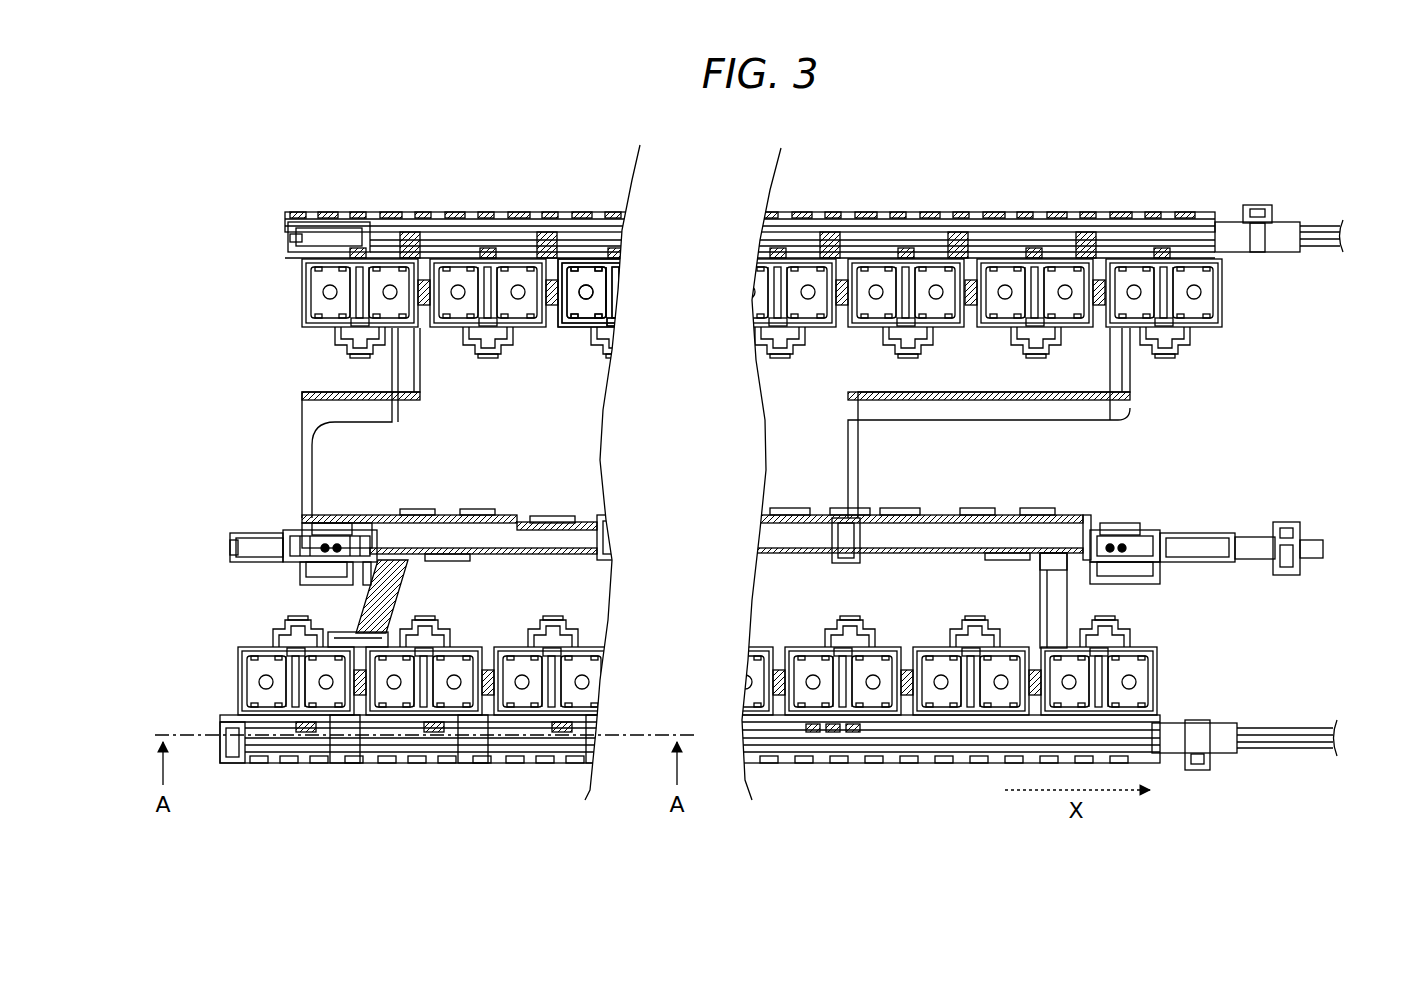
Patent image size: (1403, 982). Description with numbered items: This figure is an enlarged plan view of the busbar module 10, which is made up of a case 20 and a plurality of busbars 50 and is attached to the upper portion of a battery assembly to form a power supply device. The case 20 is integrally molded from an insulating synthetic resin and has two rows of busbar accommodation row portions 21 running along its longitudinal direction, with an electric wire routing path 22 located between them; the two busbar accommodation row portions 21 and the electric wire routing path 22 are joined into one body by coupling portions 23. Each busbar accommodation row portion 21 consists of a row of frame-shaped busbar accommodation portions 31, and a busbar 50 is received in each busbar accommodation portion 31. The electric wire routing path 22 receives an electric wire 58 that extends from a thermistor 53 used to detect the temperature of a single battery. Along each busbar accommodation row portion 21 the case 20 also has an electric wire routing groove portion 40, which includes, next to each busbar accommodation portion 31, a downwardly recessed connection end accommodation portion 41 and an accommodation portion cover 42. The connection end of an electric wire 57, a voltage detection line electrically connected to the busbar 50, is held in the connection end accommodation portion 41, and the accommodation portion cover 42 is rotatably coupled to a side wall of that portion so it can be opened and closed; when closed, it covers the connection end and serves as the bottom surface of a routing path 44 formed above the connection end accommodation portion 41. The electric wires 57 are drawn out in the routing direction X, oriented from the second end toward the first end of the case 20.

The busbar module 10 is at (1064, 162).
The case 20 is at (856, 205).
The busbar accommodation row portion 21 is at (575, 325).
The electric wire routing path 22 is at (516, 515).
The coupling portion 23 is at (300, 402).
The busbar accommodation portion 31 is at (262, 645).
The electric wire routing groove portion 40 is at (930, 208).
The connection end accommodation portion 41 is at (334, 752).
The accommodation portion cover 42 is at (278, 748).
The routing path 44 is at (304, 748).
The busbar 50 is at (466, 670).
The thermistor 53 is at (342, 543).
The electric wire 57 is at (812, 750).
The electric wire 58 is at (302, 543).